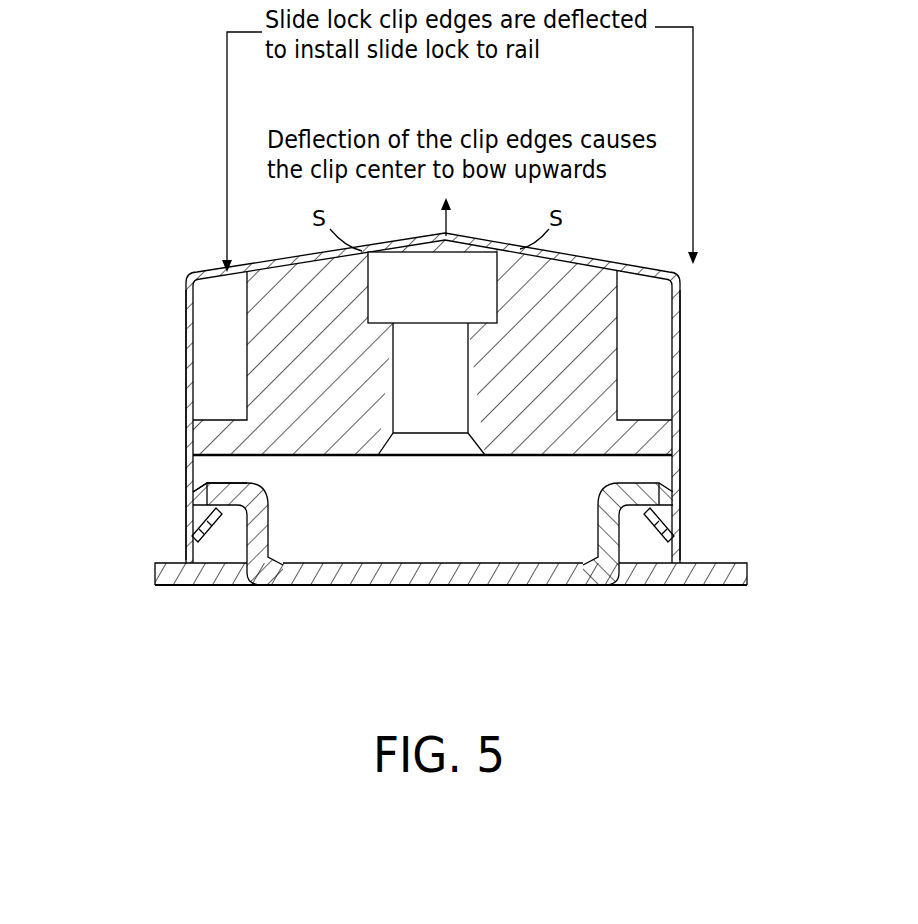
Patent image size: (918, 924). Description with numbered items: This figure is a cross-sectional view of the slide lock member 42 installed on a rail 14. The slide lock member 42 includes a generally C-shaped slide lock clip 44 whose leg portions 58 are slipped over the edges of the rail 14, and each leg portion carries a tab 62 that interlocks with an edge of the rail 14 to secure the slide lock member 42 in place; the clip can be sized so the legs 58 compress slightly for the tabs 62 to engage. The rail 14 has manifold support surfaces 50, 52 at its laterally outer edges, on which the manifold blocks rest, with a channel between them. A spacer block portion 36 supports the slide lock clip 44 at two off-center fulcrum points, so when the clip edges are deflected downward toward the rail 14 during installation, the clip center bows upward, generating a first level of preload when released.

The rail 14 is at (262, 538).
The spacer block portion 36 is at (600, 332).
The slide lock member 42 is at (128, 286).
The slide lock clip 44 is at (196, 276).
The manifold support surface 50 is at (665, 490).
The manifold support surface 52 is at (196, 492).
The leg portions 58 is at (190, 365).
The tabs 62 is at (192, 516).